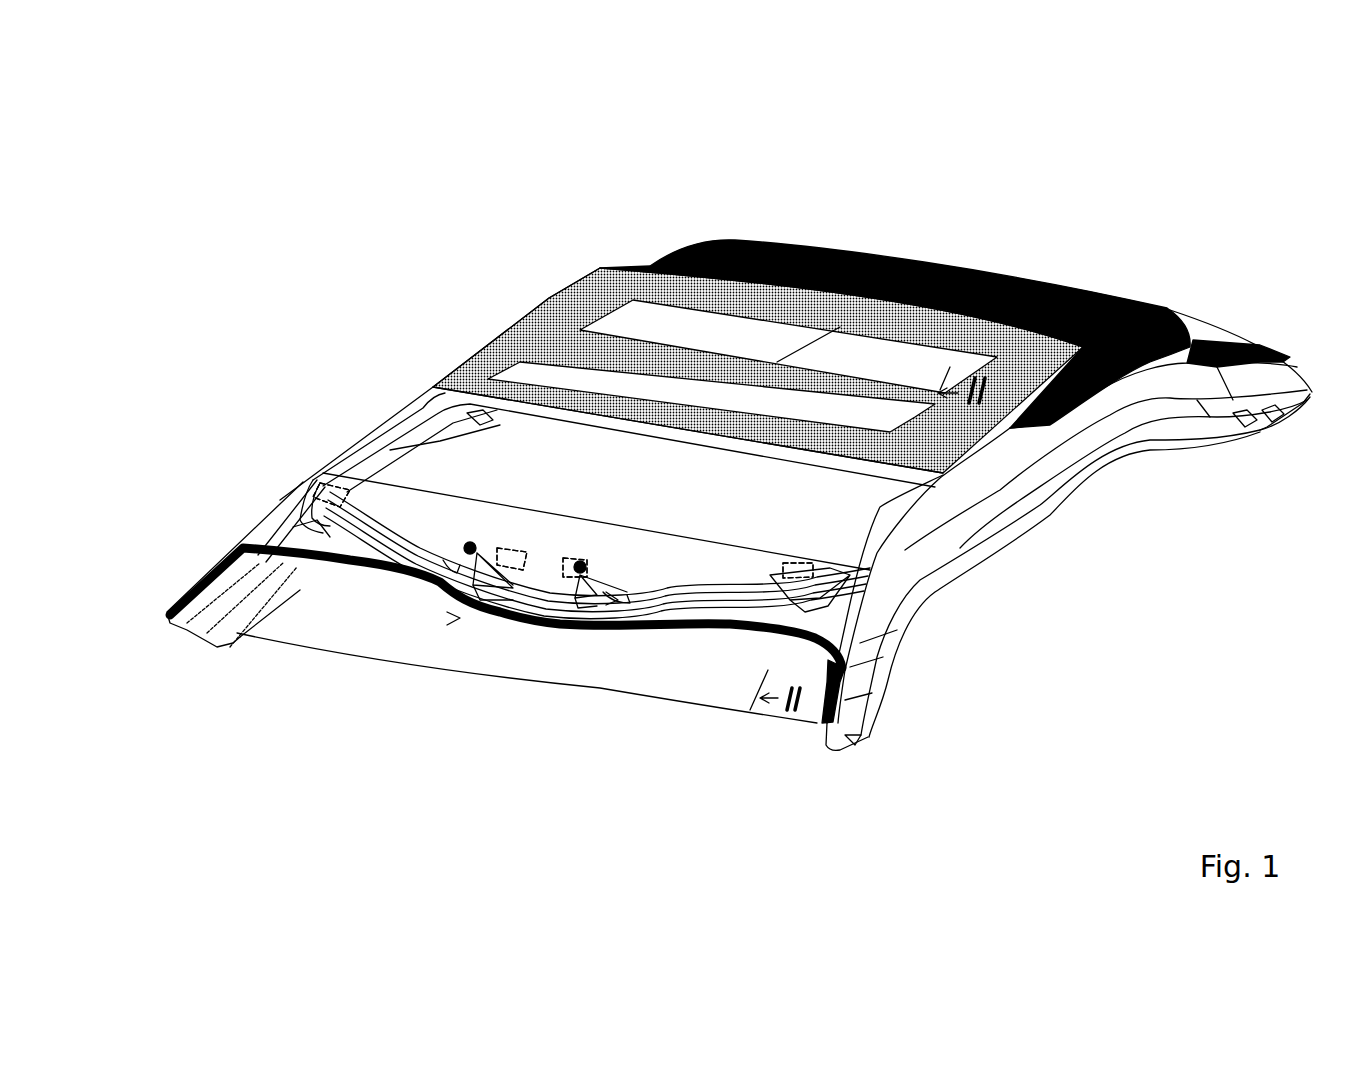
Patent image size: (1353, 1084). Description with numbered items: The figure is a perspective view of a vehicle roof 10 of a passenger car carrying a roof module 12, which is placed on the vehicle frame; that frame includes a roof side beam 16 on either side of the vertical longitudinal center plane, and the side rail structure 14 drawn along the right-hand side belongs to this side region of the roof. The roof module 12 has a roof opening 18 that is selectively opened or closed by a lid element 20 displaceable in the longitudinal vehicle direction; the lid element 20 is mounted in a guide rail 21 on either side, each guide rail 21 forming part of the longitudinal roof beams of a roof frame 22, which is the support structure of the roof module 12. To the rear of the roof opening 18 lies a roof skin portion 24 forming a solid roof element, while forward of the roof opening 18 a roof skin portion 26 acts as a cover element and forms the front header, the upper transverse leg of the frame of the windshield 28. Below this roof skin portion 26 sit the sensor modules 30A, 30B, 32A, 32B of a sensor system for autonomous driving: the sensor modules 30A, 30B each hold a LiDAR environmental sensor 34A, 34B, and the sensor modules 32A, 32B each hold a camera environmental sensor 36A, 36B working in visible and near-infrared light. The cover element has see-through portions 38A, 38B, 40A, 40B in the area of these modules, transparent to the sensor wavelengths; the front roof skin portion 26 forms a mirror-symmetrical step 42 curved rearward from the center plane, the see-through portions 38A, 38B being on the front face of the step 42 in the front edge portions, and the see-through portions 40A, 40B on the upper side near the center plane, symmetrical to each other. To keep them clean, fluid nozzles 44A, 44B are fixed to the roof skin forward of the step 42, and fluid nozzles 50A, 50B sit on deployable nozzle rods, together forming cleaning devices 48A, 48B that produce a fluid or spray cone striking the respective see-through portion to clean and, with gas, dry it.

The vehicle roof 10 is at (547, 278).
The roof module 12 is at (1172, 304).
The roof side rail 14 is at (1043, 490).
The roof side beam 16 is at (1153, 403).
The roof opening 18 is at (444, 443).
The lid element 20 is at (612, 275).
The guide rail 21 is at (902, 521).
The roof frame 22 is at (407, 427).
The roof skin portion 24 is at (992, 268).
The roof skin portion 26 is at (360, 507).
The windshield 28 is at (437, 653).
The sensor module 30A is at (322, 482).
The environmental sensor 34A is at (289, 388).
The sensor module 30B is at (802, 563).
The environmental sensor 34B is at (834, 528).
The sensor module 32A is at (507, 547).
The environmental sensor 36A is at (537, 506).
The sensor module 32B is at (577, 556).
The environmental sensor 36B is at (632, 526).
The see-through portion 38A is at (305, 517).
The see-through portion 38B is at (837, 600).
The see-through portion 40A is at (508, 627).
The see-through portion 40B is at (588, 620).
The step 42 is at (843, 703).
The fluid nozzle 44A is at (207, 637).
The fluid nozzle 44B is at (875, 677).
The cleaning device 48A is at (447, 620).
The cleaning device 48B is at (612, 597).
The fluid nozzle 50A is at (478, 598).
The fluid nozzle 50B is at (576, 600).